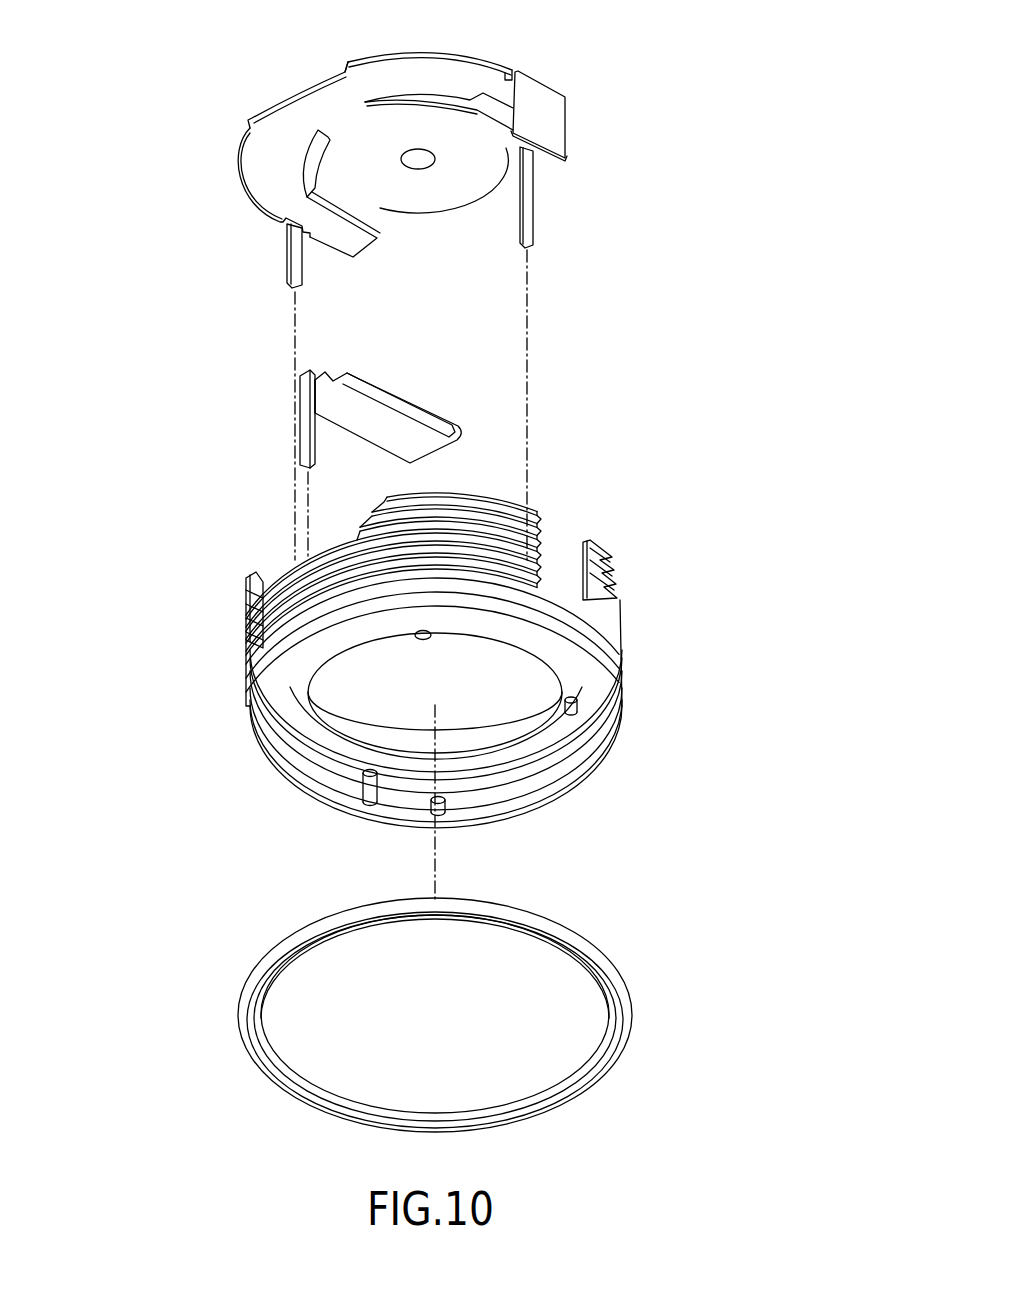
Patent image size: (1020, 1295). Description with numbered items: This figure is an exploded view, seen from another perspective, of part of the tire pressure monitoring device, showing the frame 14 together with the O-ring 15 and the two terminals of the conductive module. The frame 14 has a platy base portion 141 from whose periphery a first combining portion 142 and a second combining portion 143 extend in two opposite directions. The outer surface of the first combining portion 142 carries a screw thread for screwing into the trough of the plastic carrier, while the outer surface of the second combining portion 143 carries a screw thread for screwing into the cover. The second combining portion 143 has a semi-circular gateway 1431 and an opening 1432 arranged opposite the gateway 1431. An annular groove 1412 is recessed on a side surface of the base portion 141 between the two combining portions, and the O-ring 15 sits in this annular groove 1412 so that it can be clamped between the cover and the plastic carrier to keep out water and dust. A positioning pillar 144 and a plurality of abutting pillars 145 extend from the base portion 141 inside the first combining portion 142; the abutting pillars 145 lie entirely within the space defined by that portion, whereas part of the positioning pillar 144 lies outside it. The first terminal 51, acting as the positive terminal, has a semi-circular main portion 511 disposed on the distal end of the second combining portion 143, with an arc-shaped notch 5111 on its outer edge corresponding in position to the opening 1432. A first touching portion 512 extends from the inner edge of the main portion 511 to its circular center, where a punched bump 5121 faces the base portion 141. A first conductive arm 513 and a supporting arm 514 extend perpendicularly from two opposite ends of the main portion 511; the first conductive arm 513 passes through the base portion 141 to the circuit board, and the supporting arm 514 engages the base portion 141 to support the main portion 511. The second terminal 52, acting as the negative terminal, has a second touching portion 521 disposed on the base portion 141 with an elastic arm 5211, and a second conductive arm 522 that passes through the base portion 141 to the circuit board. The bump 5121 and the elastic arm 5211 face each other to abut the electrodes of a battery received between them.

The frame 14 is at (625, 677).
The base portion 141 is at (333, 735).
The first combining portion 142 is at (265, 675).
The second combining portion 143 is at (250, 600).
The gateway 1431 is at (620, 590).
The opening 1432 is at (277, 558).
The annular groove 1412 is at (570, 628).
The positioning pillar 144 is at (370, 803).
The abutting pillars 145 is at (447, 810).
The O-ring 15 is at (607, 950).
The first terminal 51 is at (548, 76).
The main portion 511 is at (263, 163).
The notch 5111 is at (307, 87).
The first touching portion 512 is at (470, 177).
The bump 5121 is at (418, 163).
The first conductive arm 513 is at (528, 203).
The supporting arm 514 is at (295, 258).
The second terminal 52 is at (445, 412).
The second touching portion 521 is at (370, 416).
The elastic arm 5211 is at (422, 400).
The second conductive arm 522 is at (307, 421).